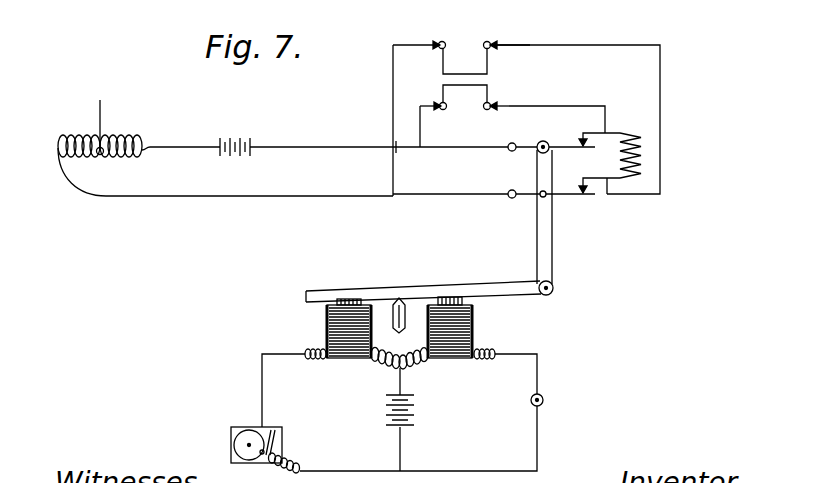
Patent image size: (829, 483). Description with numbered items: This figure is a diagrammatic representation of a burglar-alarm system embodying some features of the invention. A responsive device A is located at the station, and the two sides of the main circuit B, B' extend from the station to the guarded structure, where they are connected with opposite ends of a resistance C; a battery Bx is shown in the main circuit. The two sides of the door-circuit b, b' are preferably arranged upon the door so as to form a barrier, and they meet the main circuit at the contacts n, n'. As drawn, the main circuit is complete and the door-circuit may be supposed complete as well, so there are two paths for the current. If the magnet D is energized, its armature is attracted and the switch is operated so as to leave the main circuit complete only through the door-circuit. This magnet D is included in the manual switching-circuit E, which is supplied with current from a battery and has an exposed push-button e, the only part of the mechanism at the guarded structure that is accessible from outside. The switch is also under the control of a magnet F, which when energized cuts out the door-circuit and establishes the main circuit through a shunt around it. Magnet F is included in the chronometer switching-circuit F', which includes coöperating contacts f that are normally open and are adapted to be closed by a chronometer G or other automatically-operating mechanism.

The responsive device A is at (110, 136).
The battery Bx is at (234, 140).
The side of main circuit B' is at (273, 138).
The side of main circuit B is at (225, 172).
The contact terminals n is at (463, 35).
The side of door-circuit b is at (493, 48).
The contact terminals n' is at (465, 94).
The side of door-circuit b' is at (465, 110).
The resistance C is at (617, 155).
The magnet D is at (473, 333).
The magnet F is at (331, 328).
The chronometer switching-circuit F' is at (339, 398).
The manual switching-circuit E is at (539, 381).
The push-button e is at (543, 400).
The chronometer G is at (242, 427).
The coöperating contacts f is at (269, 430).